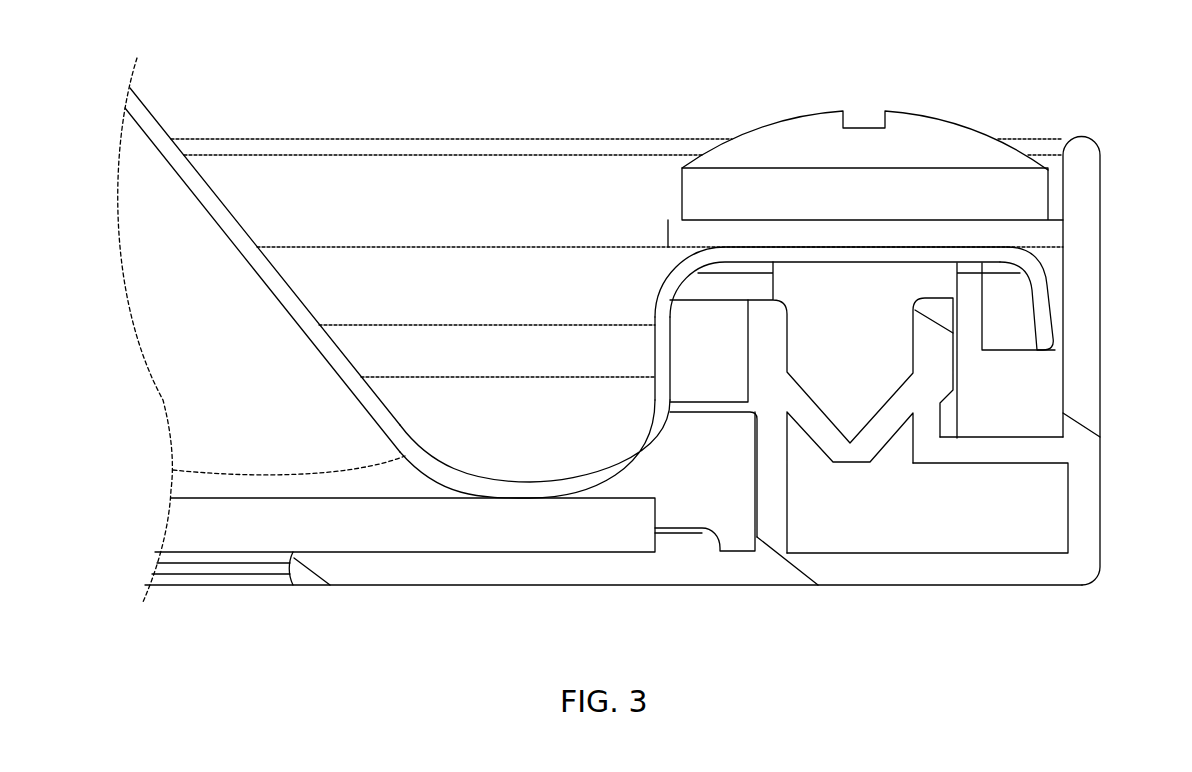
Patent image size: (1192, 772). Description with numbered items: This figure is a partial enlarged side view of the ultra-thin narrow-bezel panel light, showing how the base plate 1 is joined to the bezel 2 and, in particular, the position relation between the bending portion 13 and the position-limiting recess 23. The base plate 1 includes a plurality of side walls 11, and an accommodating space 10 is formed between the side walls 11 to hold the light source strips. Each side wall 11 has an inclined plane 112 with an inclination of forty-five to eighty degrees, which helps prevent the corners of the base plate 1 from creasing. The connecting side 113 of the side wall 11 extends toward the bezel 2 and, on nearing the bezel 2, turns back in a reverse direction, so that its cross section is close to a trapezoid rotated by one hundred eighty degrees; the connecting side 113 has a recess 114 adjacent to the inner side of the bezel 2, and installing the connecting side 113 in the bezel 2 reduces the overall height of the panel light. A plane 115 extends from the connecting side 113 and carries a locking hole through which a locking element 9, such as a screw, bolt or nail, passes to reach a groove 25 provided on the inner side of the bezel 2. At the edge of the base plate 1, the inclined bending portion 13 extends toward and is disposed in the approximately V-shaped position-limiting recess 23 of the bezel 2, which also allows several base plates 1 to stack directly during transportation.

The base plate 1 is at (115, 193).
The accommodating space 10 is at (182, 297).
The side wall 11 is at (566, 351).
The inclined plane 112 is at (234, 217).
The connecting side 113 is at (642, 458).
The recess 114 is at (528, 482).
The plane 115 is at (823, 256).
The bending portion 13 is at (1033, 313).
The locking element 9 is at (920, 113).
The bezel 2 is at (1083, 197).
The position-limiting recess 23 is at (1032, 398).
The groove 25 is at (883, 408).